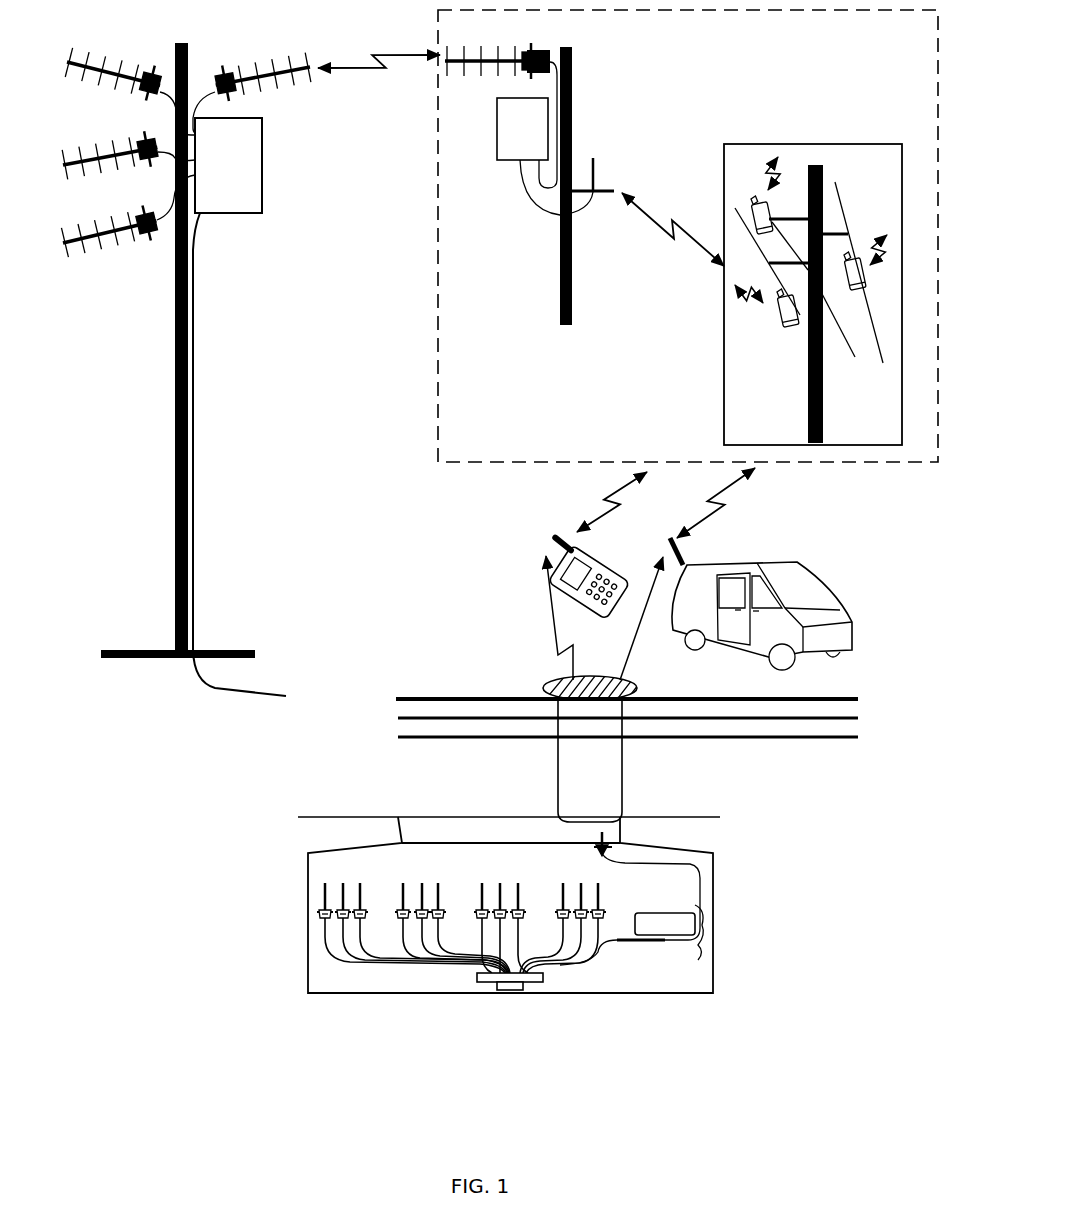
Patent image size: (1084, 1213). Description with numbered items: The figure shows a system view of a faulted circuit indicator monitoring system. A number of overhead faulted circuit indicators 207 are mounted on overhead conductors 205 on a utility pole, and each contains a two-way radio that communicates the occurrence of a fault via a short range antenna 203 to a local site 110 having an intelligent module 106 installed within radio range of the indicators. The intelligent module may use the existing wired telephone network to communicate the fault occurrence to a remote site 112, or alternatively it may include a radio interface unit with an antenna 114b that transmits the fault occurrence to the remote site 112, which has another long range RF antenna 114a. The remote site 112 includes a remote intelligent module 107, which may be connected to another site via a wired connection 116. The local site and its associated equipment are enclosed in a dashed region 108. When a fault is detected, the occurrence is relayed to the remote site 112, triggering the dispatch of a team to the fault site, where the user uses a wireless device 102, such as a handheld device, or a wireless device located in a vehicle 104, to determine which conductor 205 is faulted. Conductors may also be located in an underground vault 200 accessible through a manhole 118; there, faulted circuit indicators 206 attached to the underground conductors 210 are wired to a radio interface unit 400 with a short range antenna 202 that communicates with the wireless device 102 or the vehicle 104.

The wireless device 102 is at (600, 555).
The vehicle 104 is at (795, 560).
The intelligent module 106 is at (497, 160).
The remote intelligent module 107 is at (242, 214).
The base station system 108 is at (438, 448).
The local site 110 is at (560, 286).
The remote site 112 is at (175, 338).
The long range RF antenna 114a is at (304, 80).
The antenna 114b is at (450, 78).
The wired connection 116 is at (270, 698).
The manhole 118 is at (548, 683).
The underground vault 200 is at (308, 872).
The short range antenna 202 is at (596, 848).
The short range antenna 203 is at (597, 170).
The conductor 205 is at (832, 380).
The faulted circuit indicators 206 is at (365, 912).
The overhead faulted circuit indicators 207 is at (778, 328).
The underground conductors 210 is at (352, 910).
The radio interface unit 400 is at (645, 912).